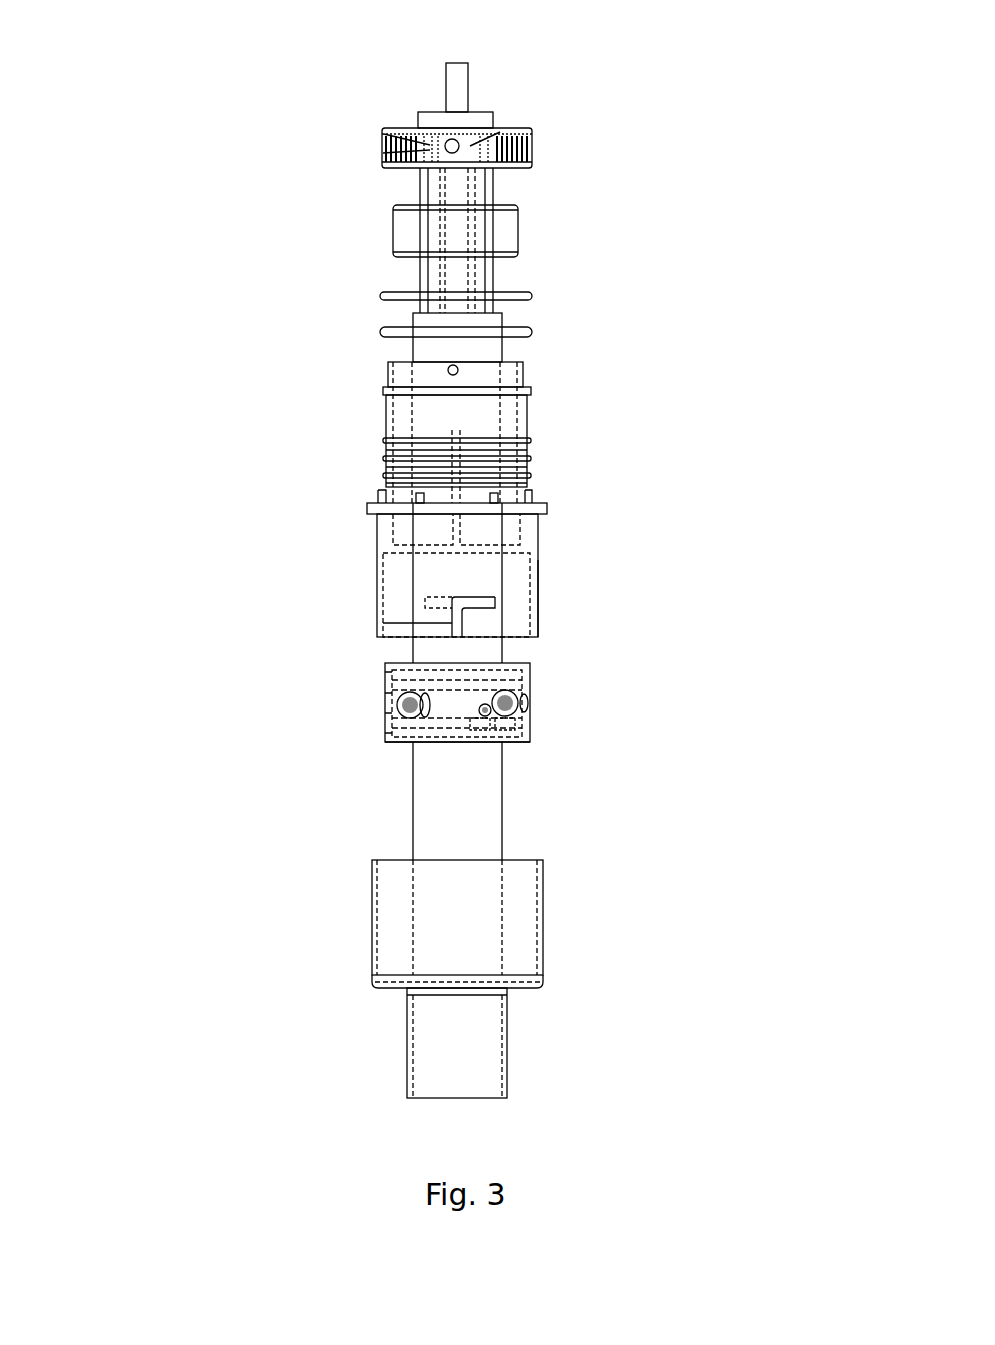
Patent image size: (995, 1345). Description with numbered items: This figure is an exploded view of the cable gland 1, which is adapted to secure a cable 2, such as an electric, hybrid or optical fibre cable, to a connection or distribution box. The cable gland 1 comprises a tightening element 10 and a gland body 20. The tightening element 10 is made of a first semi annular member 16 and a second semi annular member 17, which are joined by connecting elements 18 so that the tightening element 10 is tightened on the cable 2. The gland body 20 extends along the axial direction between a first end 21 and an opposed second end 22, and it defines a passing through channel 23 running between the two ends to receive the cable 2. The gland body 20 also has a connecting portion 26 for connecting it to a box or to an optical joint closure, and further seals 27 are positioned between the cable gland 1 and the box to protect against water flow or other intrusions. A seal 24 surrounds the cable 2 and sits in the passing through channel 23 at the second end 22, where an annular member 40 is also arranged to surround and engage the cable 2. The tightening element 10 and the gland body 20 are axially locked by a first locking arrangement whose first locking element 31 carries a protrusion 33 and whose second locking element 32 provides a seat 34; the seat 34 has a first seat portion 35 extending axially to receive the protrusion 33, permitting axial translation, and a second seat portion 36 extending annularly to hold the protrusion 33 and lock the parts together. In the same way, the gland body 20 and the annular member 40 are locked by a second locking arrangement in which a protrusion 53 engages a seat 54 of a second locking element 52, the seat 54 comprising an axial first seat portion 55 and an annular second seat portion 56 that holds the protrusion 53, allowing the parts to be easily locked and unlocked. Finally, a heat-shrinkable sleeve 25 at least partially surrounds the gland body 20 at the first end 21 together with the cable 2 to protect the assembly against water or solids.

The cable gland 1 is at (222, 126).
The cable 2 is at (448, 835).
The tightening element 10 is at (378, 703).
The first semi annular member 16 is at (522, 724).
The second semi annular member 17 is at (480, 724).
The connecting elements 18 is at (530, 700).
The gland body 20 is at (372, 552).
The first end 21 is at (540, 636).
The second end 22 is at (500, 361).
The passing through channel 23 is at (380, 667).
The seal 24 is at (518, 228).
The heat-shrinkable sleeve 25 is at (445, 917).
The connecting portion 26 is at (538, 452).
The further seals 27 is at (527, 291).
The first locking element 31 is at (490, 726).
The second locking element 32 is at (495, 601).
The protrusion 33 is at (383, 745).
The seat 34 is at (447, 607).
The first seat portion 35 is at (452, 623).
The second seat portion 36 is at (473, 597).
The annular member 40 is at (538, 139).
The second locking element 52 is at (384, 134).
The protrusion 53 is at (448, 370).
The seat 54 is at (500, 132).
The first seat portion 55 is at (383, 153).
The second seat portion 56 is at (448, 140).